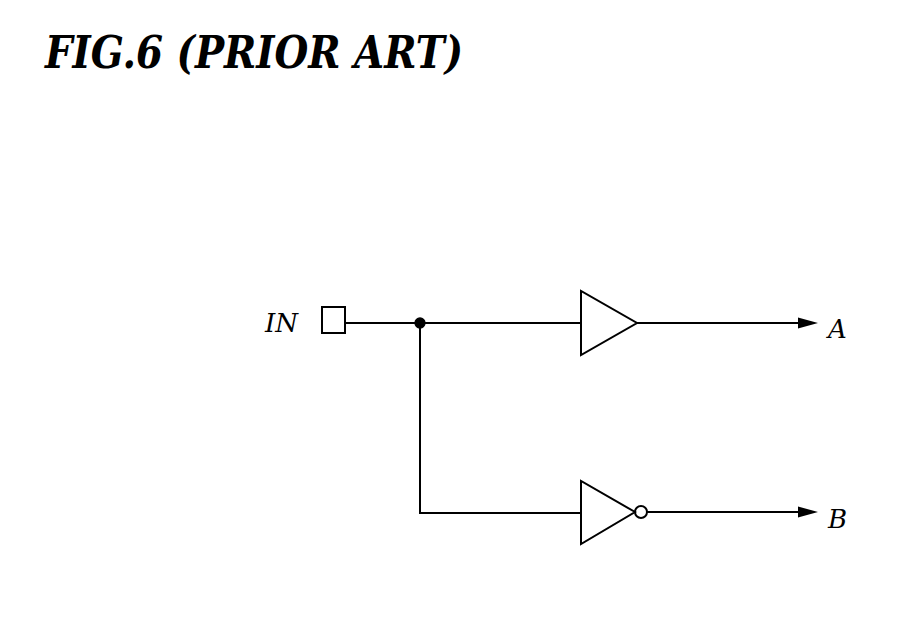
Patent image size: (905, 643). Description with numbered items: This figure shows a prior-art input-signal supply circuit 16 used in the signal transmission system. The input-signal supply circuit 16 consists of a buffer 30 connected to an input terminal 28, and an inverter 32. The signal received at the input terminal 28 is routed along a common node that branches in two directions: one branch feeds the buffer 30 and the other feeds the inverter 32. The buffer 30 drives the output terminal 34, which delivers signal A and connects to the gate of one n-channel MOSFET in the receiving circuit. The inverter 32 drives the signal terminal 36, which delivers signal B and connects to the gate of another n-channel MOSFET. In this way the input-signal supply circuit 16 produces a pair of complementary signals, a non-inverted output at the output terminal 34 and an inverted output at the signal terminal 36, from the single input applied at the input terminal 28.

The input-signal supply circuit 16 is at (408, 528).
The input terminal 28 is at (333, 305).
The buffer 30 is at (612, 310).
The inverter 32 is at (600, 535).
The output terminal 34 is at (742, 322).
The signal terminal 36 is at (735, 514).